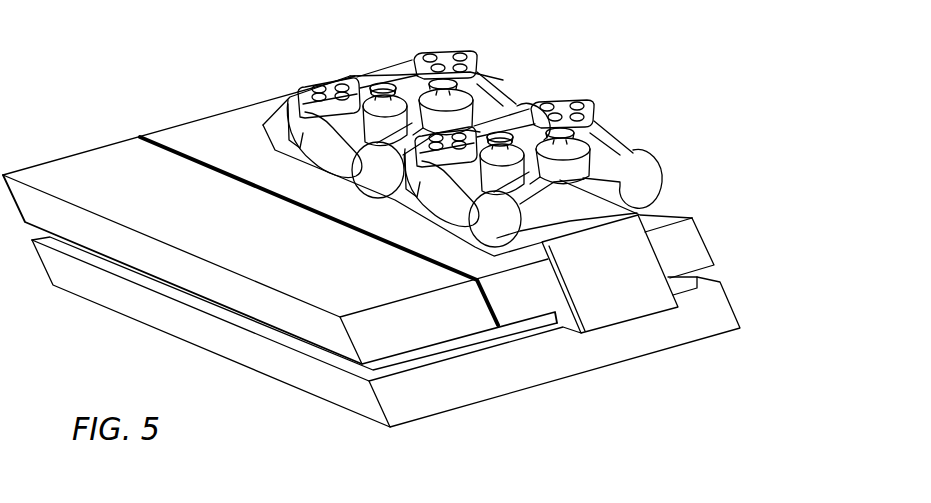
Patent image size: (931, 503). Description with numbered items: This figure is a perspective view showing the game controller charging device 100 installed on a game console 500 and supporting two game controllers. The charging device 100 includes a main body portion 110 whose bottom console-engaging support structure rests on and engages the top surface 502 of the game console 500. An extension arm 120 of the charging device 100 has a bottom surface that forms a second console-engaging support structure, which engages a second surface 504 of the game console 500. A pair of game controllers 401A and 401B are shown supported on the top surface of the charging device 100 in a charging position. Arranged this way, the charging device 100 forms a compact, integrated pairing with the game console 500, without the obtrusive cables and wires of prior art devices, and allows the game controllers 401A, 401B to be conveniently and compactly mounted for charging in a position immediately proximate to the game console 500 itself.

The game console 500 is at (416, 251).
The top surface 502 is at (665, 210).
The second surface 504 is at (688, 240).
The charging device 100 is at (477, 244).
The main body portion 110 is at (584, 202).
The extension arm 120 is at (633, 307).
The game controller 401A is at (442, 50).
The game controller 401B is at (553, 107).